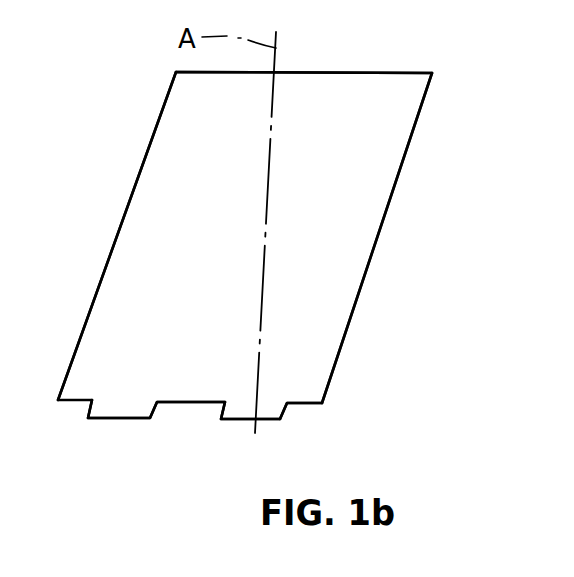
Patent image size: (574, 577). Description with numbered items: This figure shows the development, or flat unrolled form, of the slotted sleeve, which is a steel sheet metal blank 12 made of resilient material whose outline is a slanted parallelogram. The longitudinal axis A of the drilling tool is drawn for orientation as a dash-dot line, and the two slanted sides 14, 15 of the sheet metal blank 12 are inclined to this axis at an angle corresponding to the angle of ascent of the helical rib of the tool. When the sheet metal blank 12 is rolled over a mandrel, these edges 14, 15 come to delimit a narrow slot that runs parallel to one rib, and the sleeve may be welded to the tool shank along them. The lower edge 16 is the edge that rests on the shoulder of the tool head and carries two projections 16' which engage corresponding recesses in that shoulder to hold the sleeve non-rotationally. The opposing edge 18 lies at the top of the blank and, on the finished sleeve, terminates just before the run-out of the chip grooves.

The sheet metal blank 12 is at (317, 325).
The side edge of the sheet metal blank 14 is at (125, 215).
The side edge of the sheet metal blank 15 is at (376, 243).
The lower edge 16 is at (331, 429).
The projections 16' is at (177, 437).
The opposing edge 18 is at (315, 73).